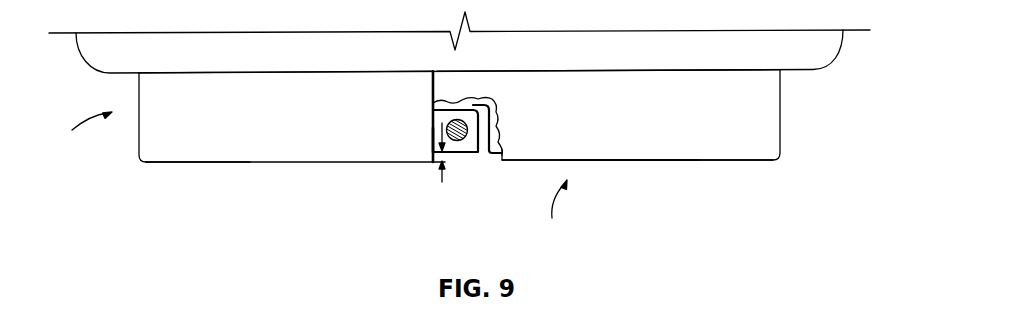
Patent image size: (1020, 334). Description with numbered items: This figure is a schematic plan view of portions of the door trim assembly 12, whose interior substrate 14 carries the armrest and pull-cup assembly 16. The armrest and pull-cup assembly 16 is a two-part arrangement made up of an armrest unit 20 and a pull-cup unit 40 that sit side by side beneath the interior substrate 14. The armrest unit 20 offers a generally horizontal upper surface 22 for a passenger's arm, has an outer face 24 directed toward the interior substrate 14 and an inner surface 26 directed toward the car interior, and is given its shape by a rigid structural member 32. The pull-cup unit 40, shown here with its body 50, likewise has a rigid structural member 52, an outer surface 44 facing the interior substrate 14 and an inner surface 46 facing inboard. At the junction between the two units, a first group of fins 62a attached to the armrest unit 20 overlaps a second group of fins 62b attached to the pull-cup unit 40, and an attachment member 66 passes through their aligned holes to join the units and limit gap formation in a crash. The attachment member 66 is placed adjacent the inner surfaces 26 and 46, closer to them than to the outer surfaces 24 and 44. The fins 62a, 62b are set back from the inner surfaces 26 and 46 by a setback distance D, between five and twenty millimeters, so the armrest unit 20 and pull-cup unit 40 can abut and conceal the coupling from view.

The door trim assembly 12 is at (78, 128).
The interior substrate 14 is at (798, 60).
The armrest and pull-cup assembly 16 is at (555, 214).
The armrest unit 20 is at (262, 147).
The upper surface 22 is at (391, 111).
The outer face 24 is at (186, 70).
The inner surface 26 is at (322, 162).
The structural member 32 is at (242, 145).
The pull-cup unit 40 is at (637, 145).
The outer surface 44 is at (722, 68).
The inner surface 46 is at (705, 161).
The pull-cup unit body 50 is at (659, 108).
The structural member 52 is at (642, 143).
The first group of fins 62a is at (432, 140).
The second group of fins 62b is at (460, 101).
The attachment member 66 is at (462, 140).
The setback distance D is at (447, 157).